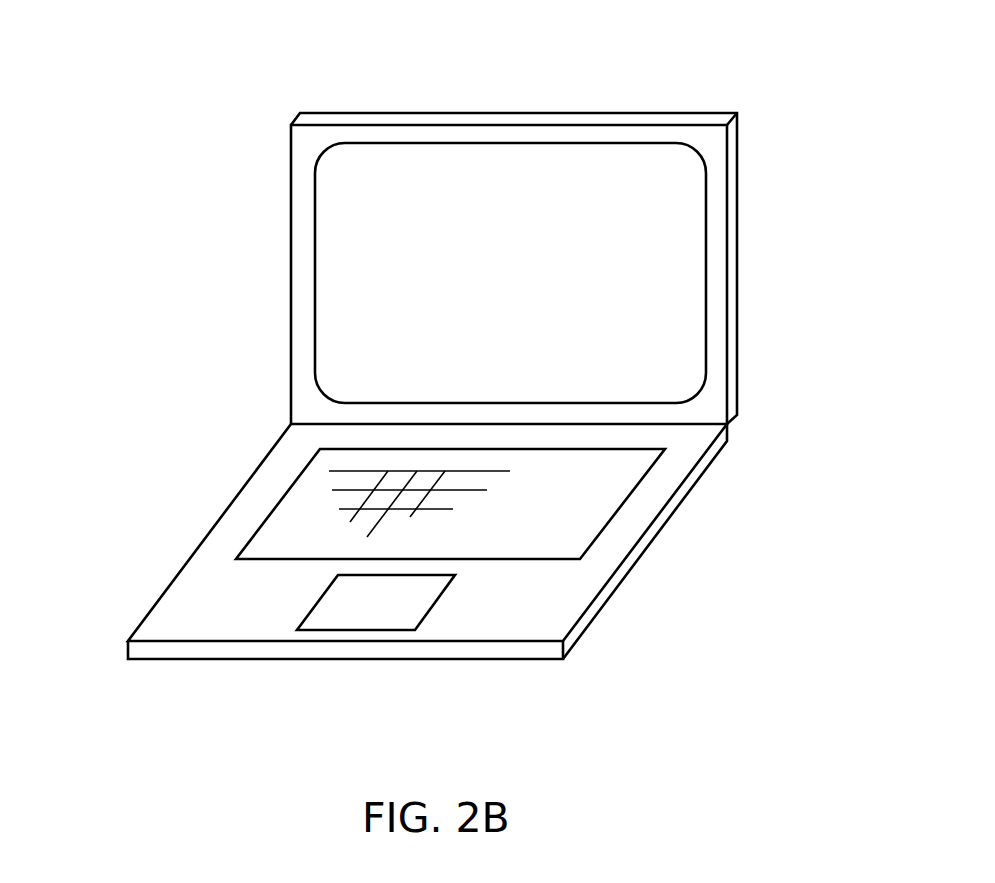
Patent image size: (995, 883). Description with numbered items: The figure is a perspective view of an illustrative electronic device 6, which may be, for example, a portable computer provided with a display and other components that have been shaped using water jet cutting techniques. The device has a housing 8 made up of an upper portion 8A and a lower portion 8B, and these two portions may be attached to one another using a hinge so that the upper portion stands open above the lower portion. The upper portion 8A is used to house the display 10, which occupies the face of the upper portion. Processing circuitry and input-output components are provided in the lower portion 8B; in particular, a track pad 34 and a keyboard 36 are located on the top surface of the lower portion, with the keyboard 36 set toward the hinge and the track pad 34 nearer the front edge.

The device 6 is at (770, 54).
The housing 8 is at (247, 127).
The upper portion 8A is at (735, 247).
The lower portion 8B is at (643, 543).
The display 10 is at (513, 162).
The track pad 34 is at (382, 615).
The keyboard 36 is at (523, 545).